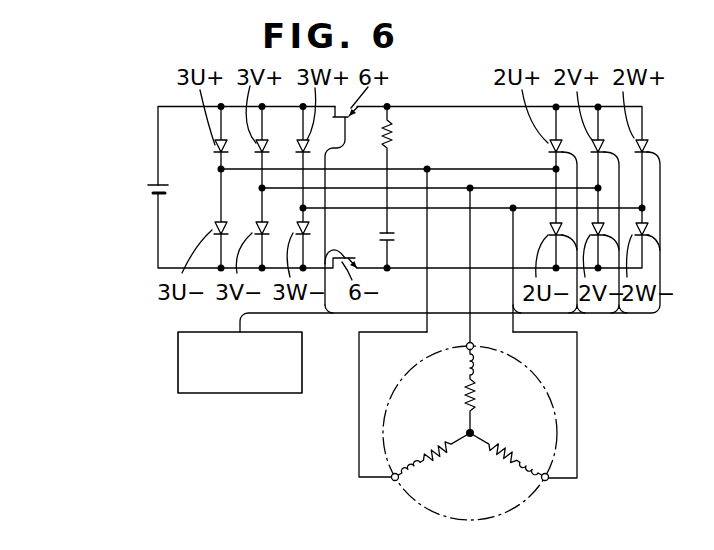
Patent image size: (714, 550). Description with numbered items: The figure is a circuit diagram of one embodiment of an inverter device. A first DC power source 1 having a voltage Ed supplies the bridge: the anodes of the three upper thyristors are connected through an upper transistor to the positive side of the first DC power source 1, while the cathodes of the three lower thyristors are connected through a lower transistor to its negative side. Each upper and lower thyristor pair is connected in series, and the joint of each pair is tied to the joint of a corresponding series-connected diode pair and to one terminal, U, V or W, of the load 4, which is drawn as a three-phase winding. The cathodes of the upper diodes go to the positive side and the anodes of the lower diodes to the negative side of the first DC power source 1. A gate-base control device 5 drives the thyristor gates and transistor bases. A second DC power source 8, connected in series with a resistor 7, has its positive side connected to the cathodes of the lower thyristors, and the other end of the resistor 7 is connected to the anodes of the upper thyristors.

The first DC power source 1 is at (145, 193).
The load 4 is at (493, 518).
The gate-base control device 5 is at (240, 393).
The resistor 7 is at (393, 141).
The second DC power source 8 is at (403, 232).